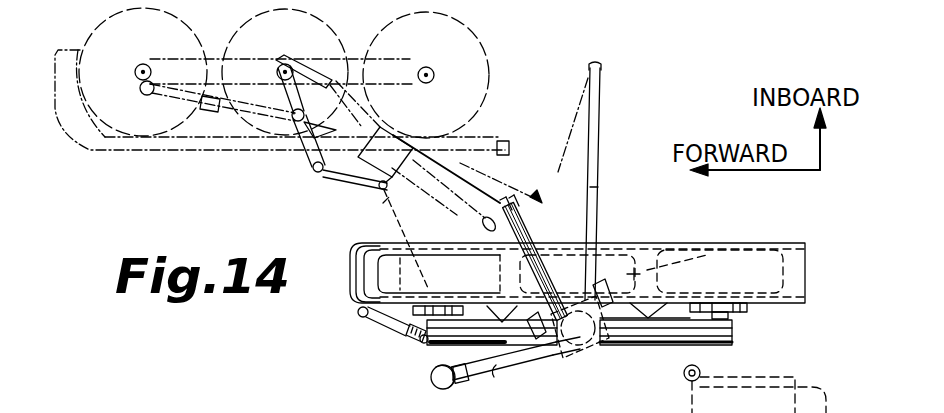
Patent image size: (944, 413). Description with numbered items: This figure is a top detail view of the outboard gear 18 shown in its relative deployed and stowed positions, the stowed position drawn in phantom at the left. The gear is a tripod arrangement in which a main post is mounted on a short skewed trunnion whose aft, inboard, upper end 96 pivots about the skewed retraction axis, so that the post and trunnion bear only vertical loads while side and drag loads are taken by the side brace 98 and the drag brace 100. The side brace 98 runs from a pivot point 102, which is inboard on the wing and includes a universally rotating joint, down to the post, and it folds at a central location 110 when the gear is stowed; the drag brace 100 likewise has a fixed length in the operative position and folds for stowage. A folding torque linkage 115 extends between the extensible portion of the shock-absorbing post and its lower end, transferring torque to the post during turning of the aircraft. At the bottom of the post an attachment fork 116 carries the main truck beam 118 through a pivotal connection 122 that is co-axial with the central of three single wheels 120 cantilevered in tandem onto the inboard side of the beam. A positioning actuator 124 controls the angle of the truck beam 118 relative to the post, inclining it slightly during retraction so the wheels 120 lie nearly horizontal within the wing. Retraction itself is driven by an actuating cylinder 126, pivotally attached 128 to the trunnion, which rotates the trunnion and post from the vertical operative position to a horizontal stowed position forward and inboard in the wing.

The outboard gear 18 is at (302, 230).
The trunnion end 96 is at (562, 410).
The side brace 98 is at (578, 113).
The drag brace 100 is at (383, 204).
The pivot point 102 is at (602, 62).
The central folding location 110 is at (540, 196).
The folding torque linkage 115 is at (325, 178).
The attachment fork 116 is at (493, 0).
The main truck beam 118 is at (630, 330).
The wheels 120 is at (328, 323).
The pivotal connection 122 is at (548, 19).
The positioning actuator 124 is at (178, 162).
The actuating cylinder 126 is at (528, 232).
The pivotal attachment 128 is at (600, 263).